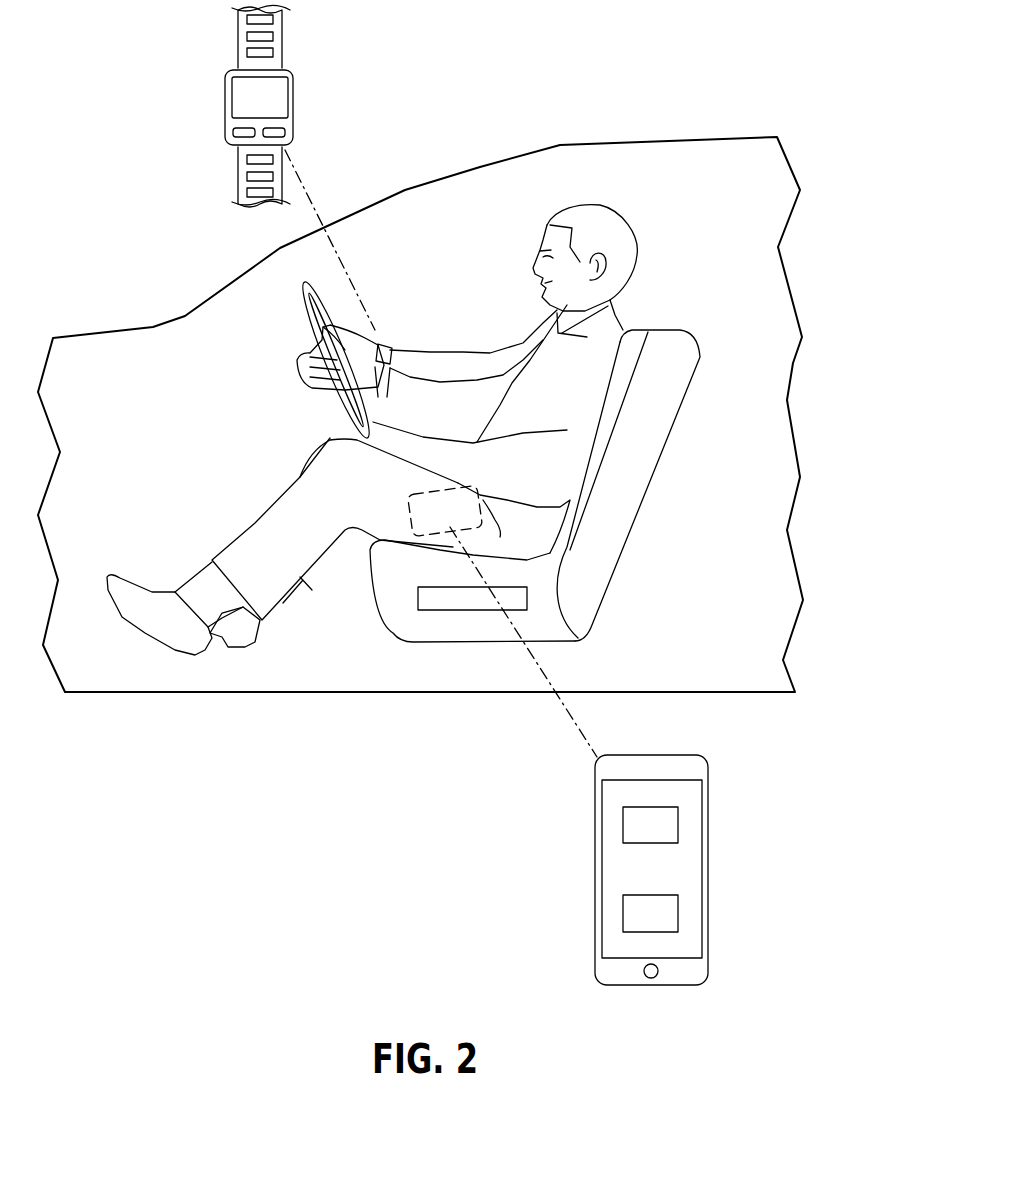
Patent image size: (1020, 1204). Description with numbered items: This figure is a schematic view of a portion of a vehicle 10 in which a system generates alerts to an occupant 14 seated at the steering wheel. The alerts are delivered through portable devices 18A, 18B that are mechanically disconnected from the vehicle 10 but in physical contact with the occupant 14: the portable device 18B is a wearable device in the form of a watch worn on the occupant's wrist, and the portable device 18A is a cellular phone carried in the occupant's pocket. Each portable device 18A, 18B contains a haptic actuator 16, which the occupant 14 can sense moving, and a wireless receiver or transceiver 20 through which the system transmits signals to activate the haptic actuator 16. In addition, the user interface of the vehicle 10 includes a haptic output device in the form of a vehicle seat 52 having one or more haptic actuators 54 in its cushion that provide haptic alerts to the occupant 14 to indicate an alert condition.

The vehicle 10 is at (100, 330).
The occupant 14 is at (610, 540).
The haptic actuator 16 is at (232, 133).
The portable device 18A is at (623, 870).
The portable device 18B is at (295, 86).
The wireless receiver or transceiver 20 is at (288, 133).
The vehicle seat 52 is at (637, 453).
The haptic actuator 54 is at (467, 597).